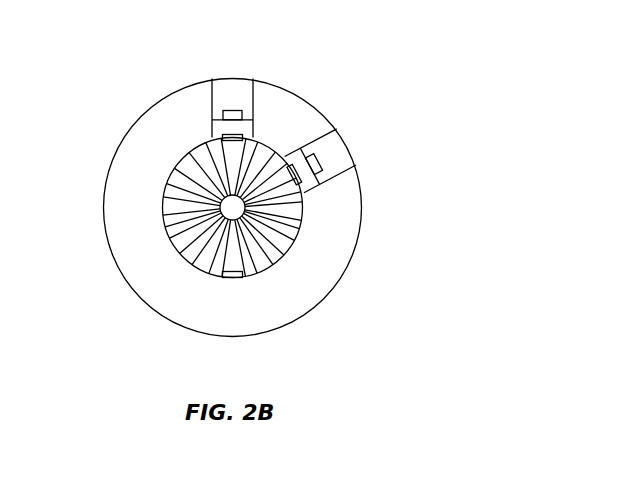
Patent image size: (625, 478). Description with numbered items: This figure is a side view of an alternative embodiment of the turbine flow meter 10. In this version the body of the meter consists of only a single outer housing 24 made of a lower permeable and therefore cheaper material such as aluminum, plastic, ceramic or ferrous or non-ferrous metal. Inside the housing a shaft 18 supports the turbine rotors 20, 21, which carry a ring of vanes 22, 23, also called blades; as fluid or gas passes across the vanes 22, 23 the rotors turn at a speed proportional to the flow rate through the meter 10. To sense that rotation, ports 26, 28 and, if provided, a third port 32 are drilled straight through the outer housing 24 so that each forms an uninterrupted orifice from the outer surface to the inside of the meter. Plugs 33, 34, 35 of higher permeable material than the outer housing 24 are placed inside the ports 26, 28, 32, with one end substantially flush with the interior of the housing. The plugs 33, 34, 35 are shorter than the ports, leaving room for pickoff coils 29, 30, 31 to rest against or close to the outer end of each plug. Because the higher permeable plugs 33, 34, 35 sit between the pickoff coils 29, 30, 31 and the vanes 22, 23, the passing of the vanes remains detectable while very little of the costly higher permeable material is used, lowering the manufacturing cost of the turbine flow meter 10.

The turbine flow meter 10 is at (303, 62).
The shaft 18 is at (228, 210).
The first turbine rotor 20 is at (288, 175).
The second turbine rotor 21 is at (271, 139).
The vanes 22 is at (301, 207).
The vanes 23 is at (284, 210).
The outer housing 24 is at (138, 118).
The first port 26 is at (363, 168).
The second port 28 is at (332, 147).
The pickoff coil 29 is at (370, 167).
The pickoff coil 30 is at (310, 168).
The pickoff coil 31 is at (238, 108).
The port 32 is at (235, 90).
The plug 33 is at (363, 192).
The plug 34 is at (300, 186).
The plug 35 is at (213, 127).